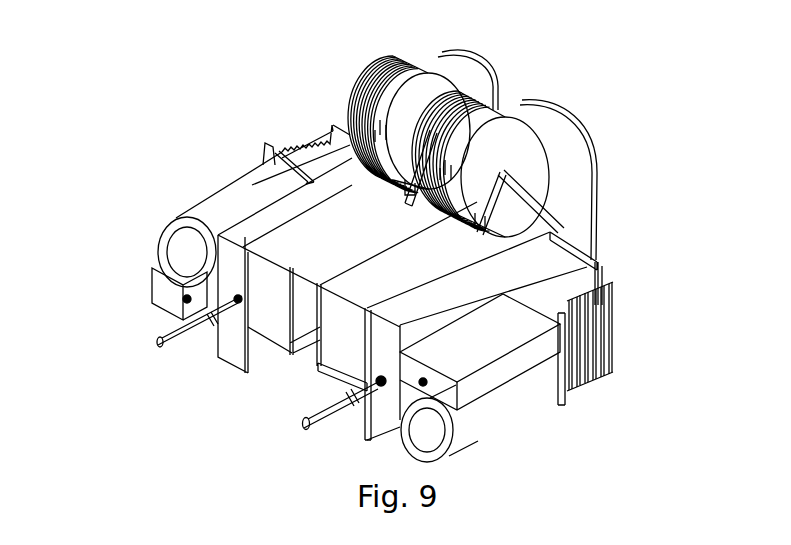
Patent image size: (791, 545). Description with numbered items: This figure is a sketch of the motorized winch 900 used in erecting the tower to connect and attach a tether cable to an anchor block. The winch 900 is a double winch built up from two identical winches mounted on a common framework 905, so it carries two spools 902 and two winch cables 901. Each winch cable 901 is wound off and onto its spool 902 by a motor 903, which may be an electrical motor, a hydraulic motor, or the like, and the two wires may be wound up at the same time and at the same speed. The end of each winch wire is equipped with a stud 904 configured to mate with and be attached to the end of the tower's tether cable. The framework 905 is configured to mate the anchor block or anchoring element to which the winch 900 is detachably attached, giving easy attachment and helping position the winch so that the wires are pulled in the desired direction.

The motorized winch 900 is at (187, 120).
The winch cable 901 is at (586, 175).
The spool 902 is at (497, 105).
The motor 903 is at (530, 373).
The stud 904 is at (305, 417).
The common framework 905 is at (310, 227).